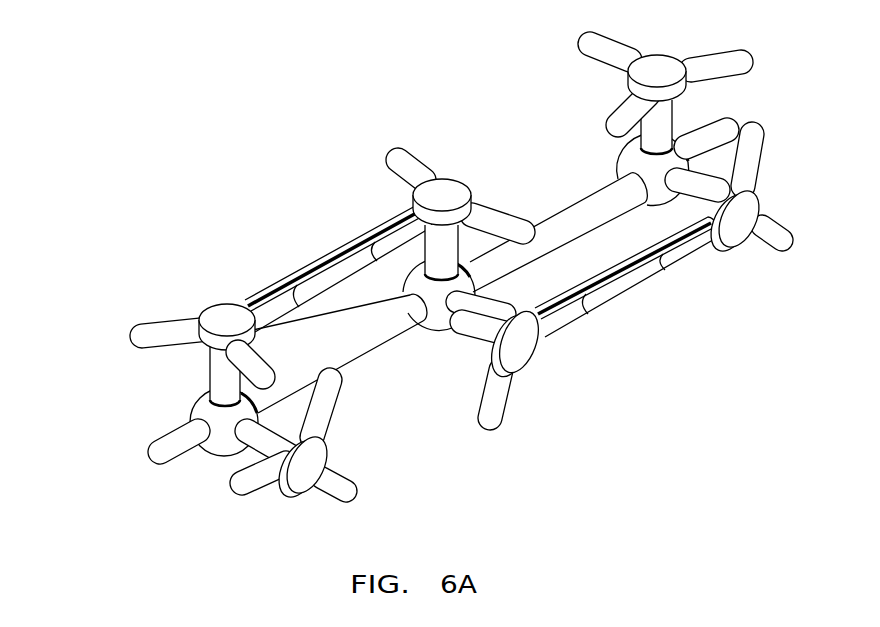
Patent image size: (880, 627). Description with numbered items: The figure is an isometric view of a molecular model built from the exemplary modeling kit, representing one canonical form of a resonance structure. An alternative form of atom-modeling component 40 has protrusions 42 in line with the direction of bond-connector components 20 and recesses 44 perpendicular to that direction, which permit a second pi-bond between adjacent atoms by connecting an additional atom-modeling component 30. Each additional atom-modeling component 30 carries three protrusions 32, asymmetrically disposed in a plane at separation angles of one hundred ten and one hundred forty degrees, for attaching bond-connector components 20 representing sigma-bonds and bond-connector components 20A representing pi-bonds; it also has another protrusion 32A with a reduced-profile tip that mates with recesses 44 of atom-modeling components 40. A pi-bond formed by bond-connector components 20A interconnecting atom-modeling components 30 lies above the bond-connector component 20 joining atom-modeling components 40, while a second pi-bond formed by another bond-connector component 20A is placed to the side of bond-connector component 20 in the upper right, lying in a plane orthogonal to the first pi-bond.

The bond-connector component 20 is at (310, 362).
The bond-connector component 20A is at (310, 262).
The additional atom-modeling component 30 is at (208, 305).
The protrusion 32 is at (133, 330).
The protrusion 32A is at (213, 380).
The atom-modeling component 40 is at (195, 404).
The protrusion 42 is at (150, 463).
The recess 44 is at (423, 272).